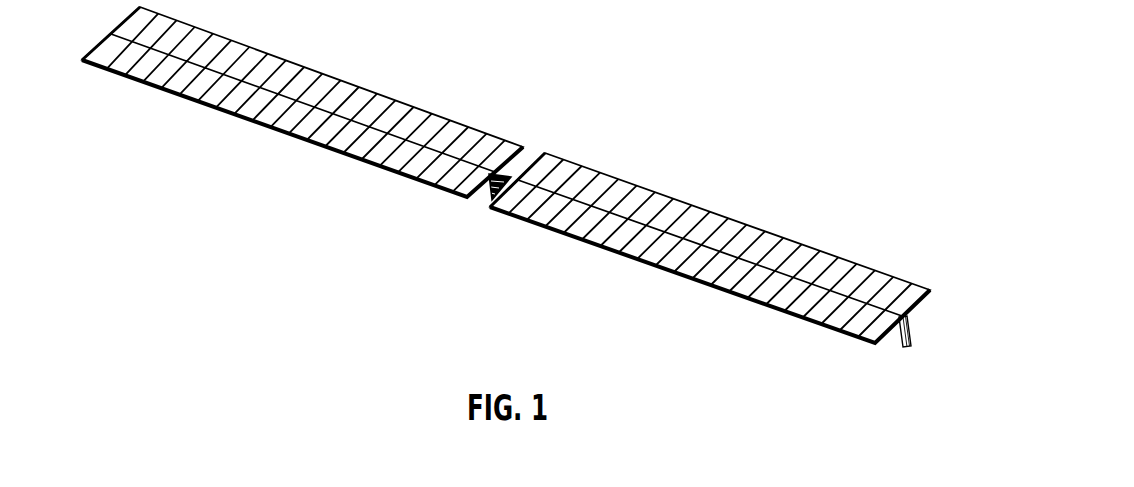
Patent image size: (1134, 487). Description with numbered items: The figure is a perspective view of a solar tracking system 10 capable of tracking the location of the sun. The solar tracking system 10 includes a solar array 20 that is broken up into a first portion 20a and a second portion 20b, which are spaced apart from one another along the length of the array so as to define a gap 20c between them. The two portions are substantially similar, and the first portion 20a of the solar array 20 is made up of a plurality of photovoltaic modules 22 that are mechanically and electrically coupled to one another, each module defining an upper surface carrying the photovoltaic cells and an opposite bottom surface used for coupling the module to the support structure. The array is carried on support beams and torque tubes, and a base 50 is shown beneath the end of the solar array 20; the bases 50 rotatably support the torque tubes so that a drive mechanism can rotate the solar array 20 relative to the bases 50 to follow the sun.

The solar tracking system 10 is at (529, 187).
The solar array 20 is at (529, 187).
The first portion 20a is at (710, 248).
The second portion 20b is at (266, 46).
The gap 20c is at (527, 156).
The photovoltaic modules 22 is at (790, 247).
The bases 50 is at (912, 333).